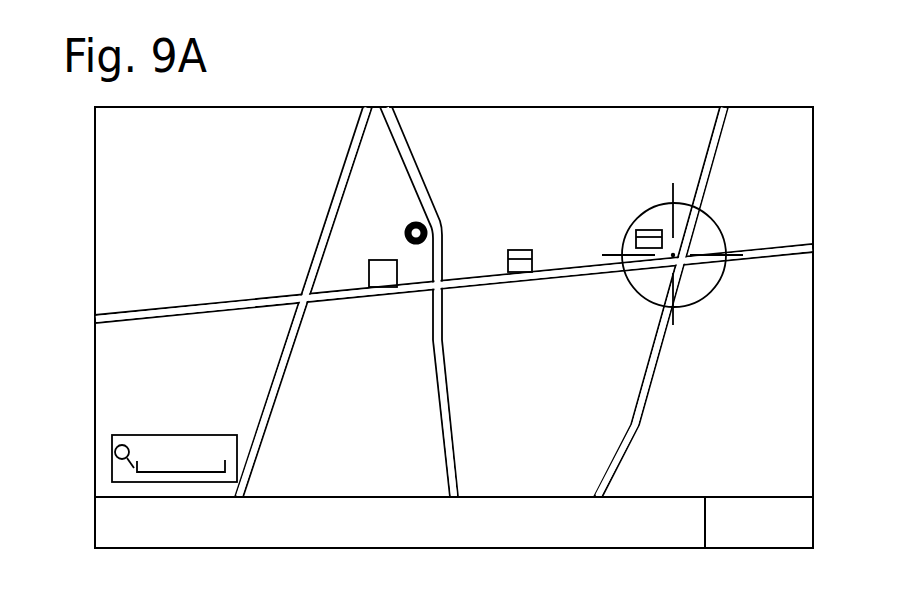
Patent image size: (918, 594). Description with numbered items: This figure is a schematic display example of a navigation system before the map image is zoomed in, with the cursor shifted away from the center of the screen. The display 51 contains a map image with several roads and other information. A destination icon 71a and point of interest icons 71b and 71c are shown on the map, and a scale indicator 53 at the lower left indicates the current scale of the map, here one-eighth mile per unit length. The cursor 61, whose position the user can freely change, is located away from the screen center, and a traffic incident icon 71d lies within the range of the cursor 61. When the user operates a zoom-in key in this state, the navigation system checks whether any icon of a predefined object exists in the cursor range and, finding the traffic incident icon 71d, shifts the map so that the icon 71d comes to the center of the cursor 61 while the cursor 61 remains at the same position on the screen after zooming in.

The display 51 is at (600, 107).
The scale indicator 53 is at (115, 465).
The cursor 61 is at (700, 296).
The destination icon 71a is at (409, 223).
The point of interest icon 71b is at (382, 260).
The point of interest icon 71c is at (514, 250).
The traffic incident icon 71d is at (642, 230).